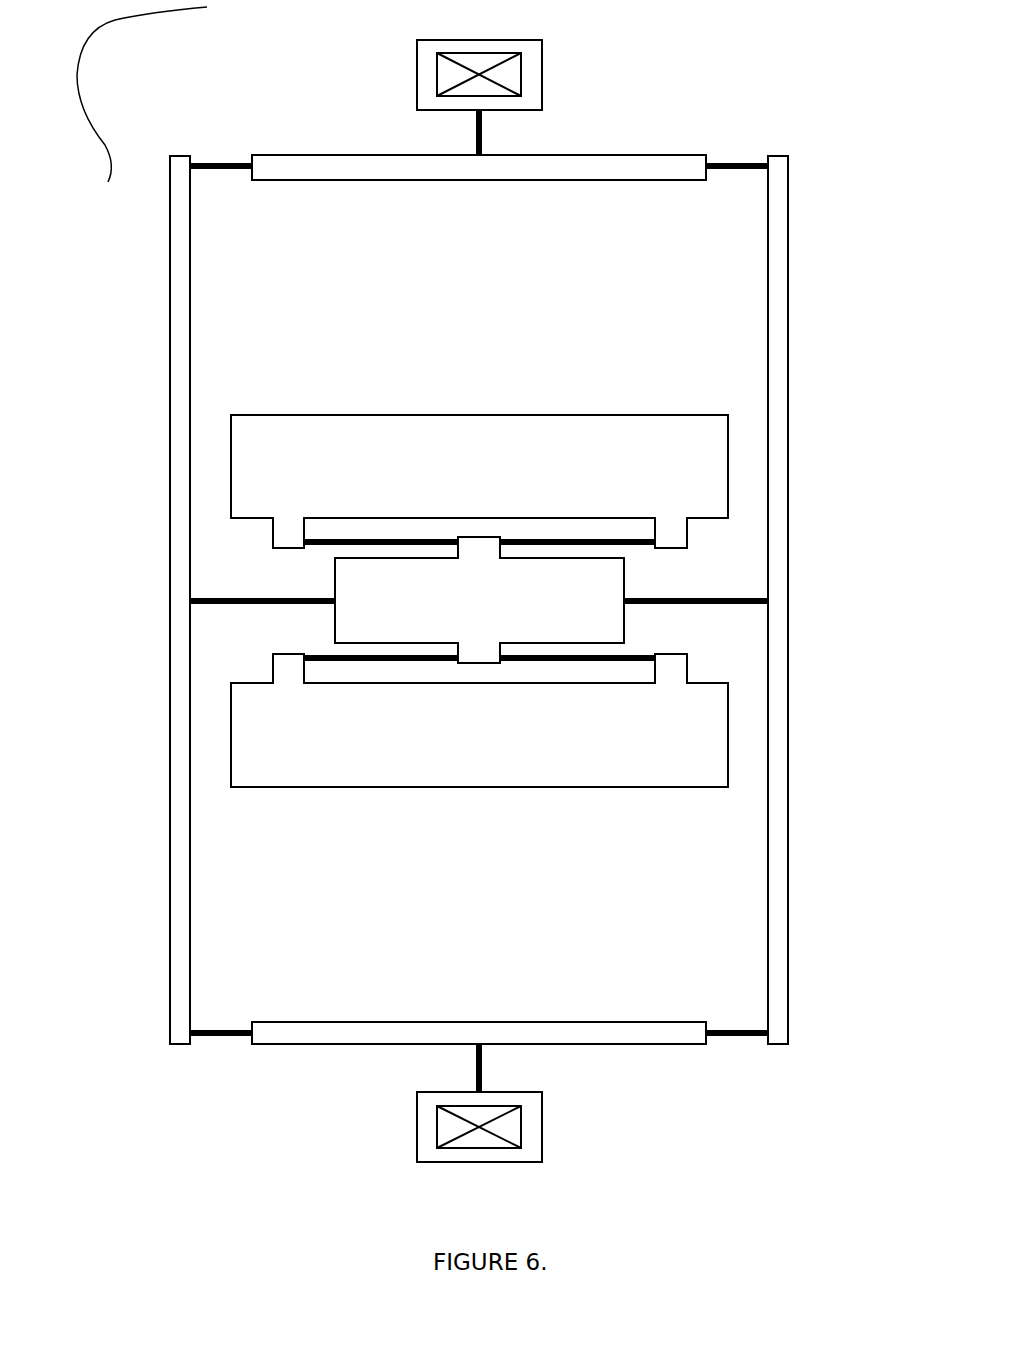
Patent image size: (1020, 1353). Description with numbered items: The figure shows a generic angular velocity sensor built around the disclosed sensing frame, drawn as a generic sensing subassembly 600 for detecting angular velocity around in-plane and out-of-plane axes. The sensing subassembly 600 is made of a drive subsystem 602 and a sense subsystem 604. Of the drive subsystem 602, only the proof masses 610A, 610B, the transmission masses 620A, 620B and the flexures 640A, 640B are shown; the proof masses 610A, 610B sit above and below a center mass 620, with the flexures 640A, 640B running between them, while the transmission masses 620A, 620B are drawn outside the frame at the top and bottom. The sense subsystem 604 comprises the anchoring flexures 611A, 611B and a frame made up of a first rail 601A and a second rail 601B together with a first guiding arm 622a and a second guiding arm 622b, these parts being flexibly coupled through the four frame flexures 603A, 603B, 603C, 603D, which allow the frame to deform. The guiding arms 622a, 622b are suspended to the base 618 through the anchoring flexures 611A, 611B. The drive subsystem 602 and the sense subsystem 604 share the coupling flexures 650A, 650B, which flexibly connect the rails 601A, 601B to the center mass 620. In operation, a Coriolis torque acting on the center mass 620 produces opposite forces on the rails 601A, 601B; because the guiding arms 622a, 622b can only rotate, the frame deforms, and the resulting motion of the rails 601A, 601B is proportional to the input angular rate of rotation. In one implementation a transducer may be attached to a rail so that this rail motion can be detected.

The sensing subassembly 600 is at (517, 1208).
The drive subsystem 602 is at (647, 806).
The sense subsystem 604 is at (802, 848).
The base 618 is at (142, 94).
The first rail 601A is at (178, 378).
The second rail 601B is at (780, 321).
The frame flexure 603A is at (217, 170).
The frame flexure 603B is at (740, 170).
The frame flexure 603C is at (219, 1028).
The frame flexure 603D is at (742, 1030).
The proof mass 610A is at (695, 467).
The proof mass 610B is at (695, 733).
The anchoring flexure 611A is at (475, 135).
The anchoring flexure 611B is at (475, 1070).
The center mass 620 is at (613, 593).
The transmission mass 620A is at (524, 72).
The transmission mass 620B is at (530, 1110).
The first guiding arm 622a is at (560, 167).
The second guiding arm 622b is at (333, 1037).
The flexure 640A is at (335, 540).
The flexure 640B is at (350, 661).
The coupling flexure 650A is at (247, 598).
The coupling flexure 650B is at (717, 600).